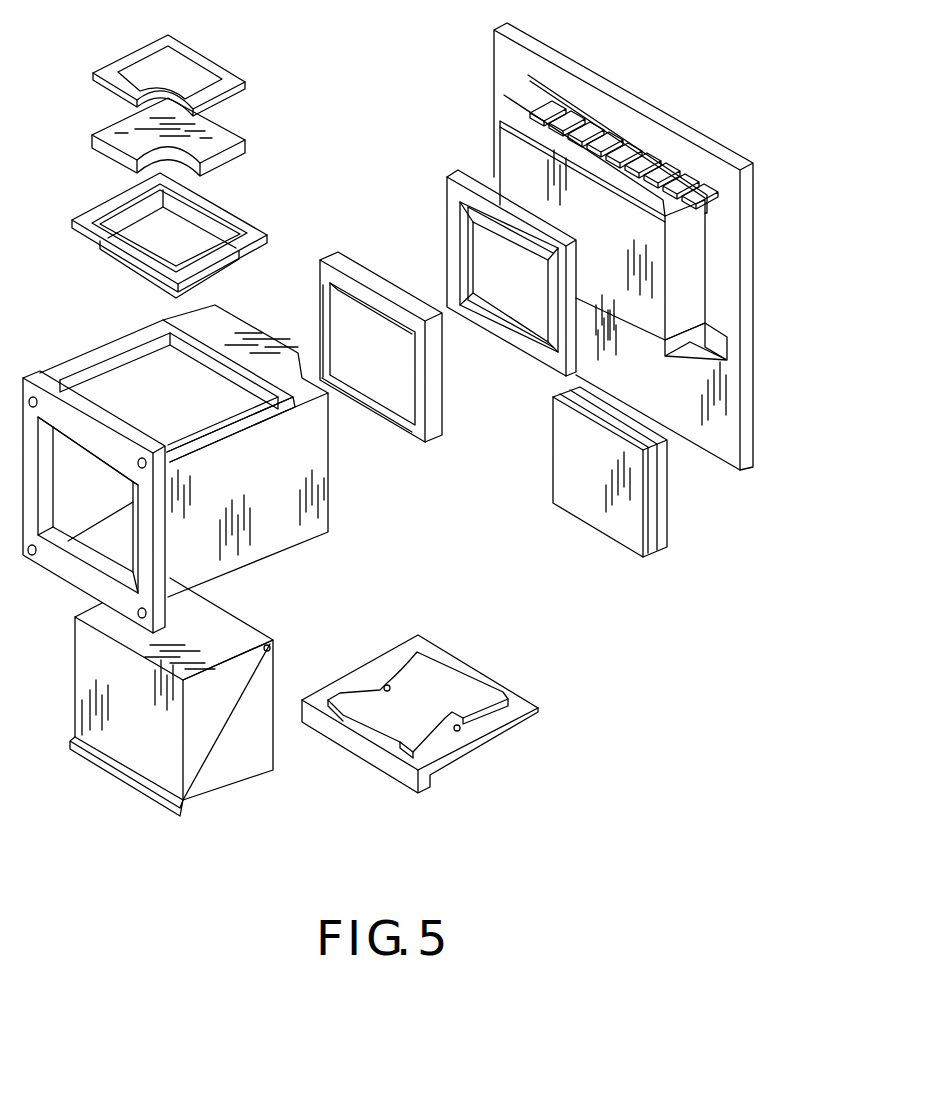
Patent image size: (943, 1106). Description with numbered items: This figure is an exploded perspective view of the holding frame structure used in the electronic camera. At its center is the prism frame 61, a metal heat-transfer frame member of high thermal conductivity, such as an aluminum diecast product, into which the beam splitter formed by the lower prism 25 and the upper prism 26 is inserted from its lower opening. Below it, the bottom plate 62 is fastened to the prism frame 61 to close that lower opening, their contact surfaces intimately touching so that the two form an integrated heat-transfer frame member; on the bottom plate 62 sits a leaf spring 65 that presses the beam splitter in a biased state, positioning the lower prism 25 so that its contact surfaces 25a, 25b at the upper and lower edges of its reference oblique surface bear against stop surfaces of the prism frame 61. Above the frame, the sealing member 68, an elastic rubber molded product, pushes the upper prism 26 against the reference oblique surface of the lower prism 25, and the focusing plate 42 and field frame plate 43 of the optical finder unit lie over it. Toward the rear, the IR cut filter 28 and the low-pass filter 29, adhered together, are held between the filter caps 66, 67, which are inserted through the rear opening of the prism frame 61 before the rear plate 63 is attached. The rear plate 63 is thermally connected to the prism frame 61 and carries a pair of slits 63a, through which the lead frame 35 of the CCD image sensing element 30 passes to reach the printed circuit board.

The field frame plate 43 is at (230, 80).
The focusing plate 42 is at (235, 148).
The sealing member 68 is at (263, 223).
The prism frame 61 is at (327, 517).
The filter cap 66 is at (425, 443).
The filter cap 67 is at (512, 345).
The rear plate 63 is at (712, 147).
The CCD image sensing element 30 is at (700, 278).
The lead frame 35 is at (708, 198).
The slits 63a is at (722, 341).
The IR cut filter 28 is at (647, 557).
The low-pass filter 29 is at (658, 533).
The upper prism 26 is at (87, 680).
The lower prism 25 is at (240, 777).
The contact surface 25a is at (268, 648).
The contact surface 25b is at (147, 783).
The bottom plate 62 is at (538, 708).
The leaf spring 65 is at (475, 718).